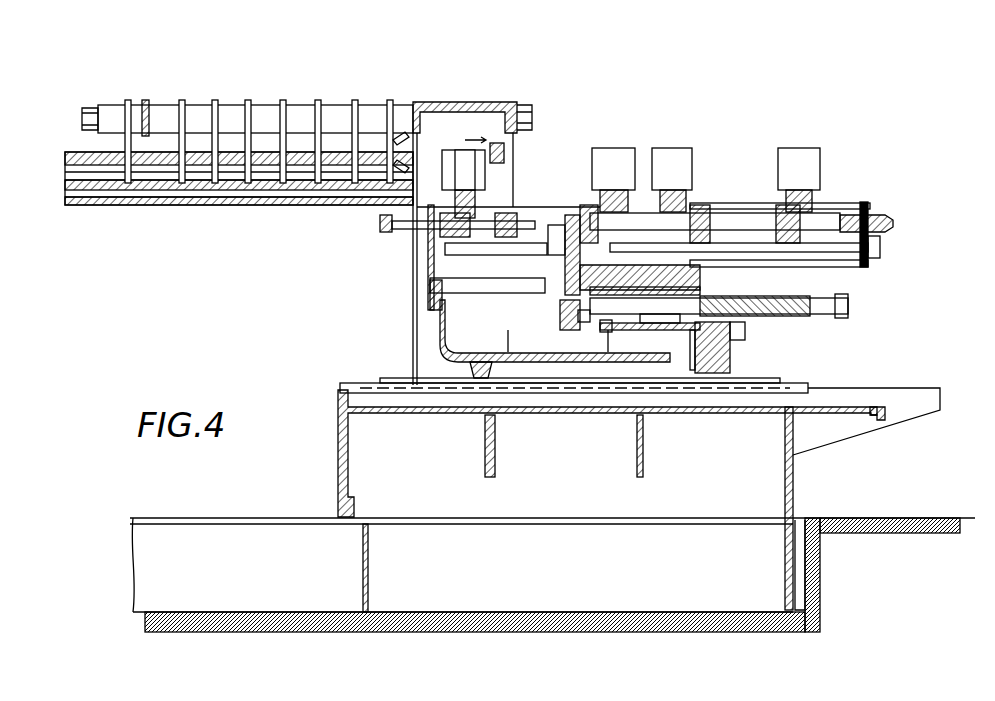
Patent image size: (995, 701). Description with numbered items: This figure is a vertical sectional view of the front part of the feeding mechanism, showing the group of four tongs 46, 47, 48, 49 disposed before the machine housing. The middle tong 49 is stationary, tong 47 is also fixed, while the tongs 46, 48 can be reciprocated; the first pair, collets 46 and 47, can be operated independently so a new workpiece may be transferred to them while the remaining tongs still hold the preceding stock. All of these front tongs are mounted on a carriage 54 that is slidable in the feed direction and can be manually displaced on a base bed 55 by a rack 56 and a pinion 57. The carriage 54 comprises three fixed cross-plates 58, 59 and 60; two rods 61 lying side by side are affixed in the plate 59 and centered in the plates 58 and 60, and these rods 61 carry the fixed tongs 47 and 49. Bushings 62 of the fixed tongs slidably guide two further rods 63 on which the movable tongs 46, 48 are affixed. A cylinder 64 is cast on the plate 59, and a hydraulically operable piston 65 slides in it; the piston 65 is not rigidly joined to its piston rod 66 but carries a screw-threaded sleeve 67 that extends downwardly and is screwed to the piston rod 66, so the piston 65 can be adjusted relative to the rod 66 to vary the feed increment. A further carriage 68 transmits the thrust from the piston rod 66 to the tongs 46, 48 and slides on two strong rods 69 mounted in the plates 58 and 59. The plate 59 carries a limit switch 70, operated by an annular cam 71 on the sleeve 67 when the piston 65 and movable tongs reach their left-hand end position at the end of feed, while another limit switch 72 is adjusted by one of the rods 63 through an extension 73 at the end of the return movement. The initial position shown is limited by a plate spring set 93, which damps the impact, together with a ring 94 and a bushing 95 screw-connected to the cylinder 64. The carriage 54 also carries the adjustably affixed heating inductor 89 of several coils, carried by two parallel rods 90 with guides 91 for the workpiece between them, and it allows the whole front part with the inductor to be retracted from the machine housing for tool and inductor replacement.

The tong 46 is at (800, 160).
The tong 47 is at (688, 160).
The tong 48 is at (612, 160).
The tong 49 is at (448, 160).
The carriage 54 is at (462, 326).
The base bed 55 is at (360, 455).
The rack 56 is at (800, 385).
The pinion 57 is at (490, 378).
The cross-plate 58 is at (430, 268).
The cross-plate 59 is at (728, 345).
The cross-plate 60 is at (865, 270).
The rods 61 is at (515, 236).
The bushings 62 is at (495, 200).
The rods 63 is at (740, 222).
The cylinder 64 is at (700, 374).
The piston 65 is at (738, 292).
The piston rod 66 is at (652, 322).
The screw-threaded sleeve 67 is at (780, 315).
The carriage 68 is at (562, 300).
The rods 69 is at (430, 300).
The limit switch 70 is at (745, 336).
The annular cam 71 is at (828, 318).
The limit switch 72 is at (880, 248).
The extension 73 is at (893, 222).
The heating inductor 89 is at (230, 182).
The rods 90 is at (366, 196).
The guides 91 is at (352, 152).
The plate spring set 93 is at (606, 330).
The ring 94 is at (578, 320).
The bushing 95 is at (598, 385).